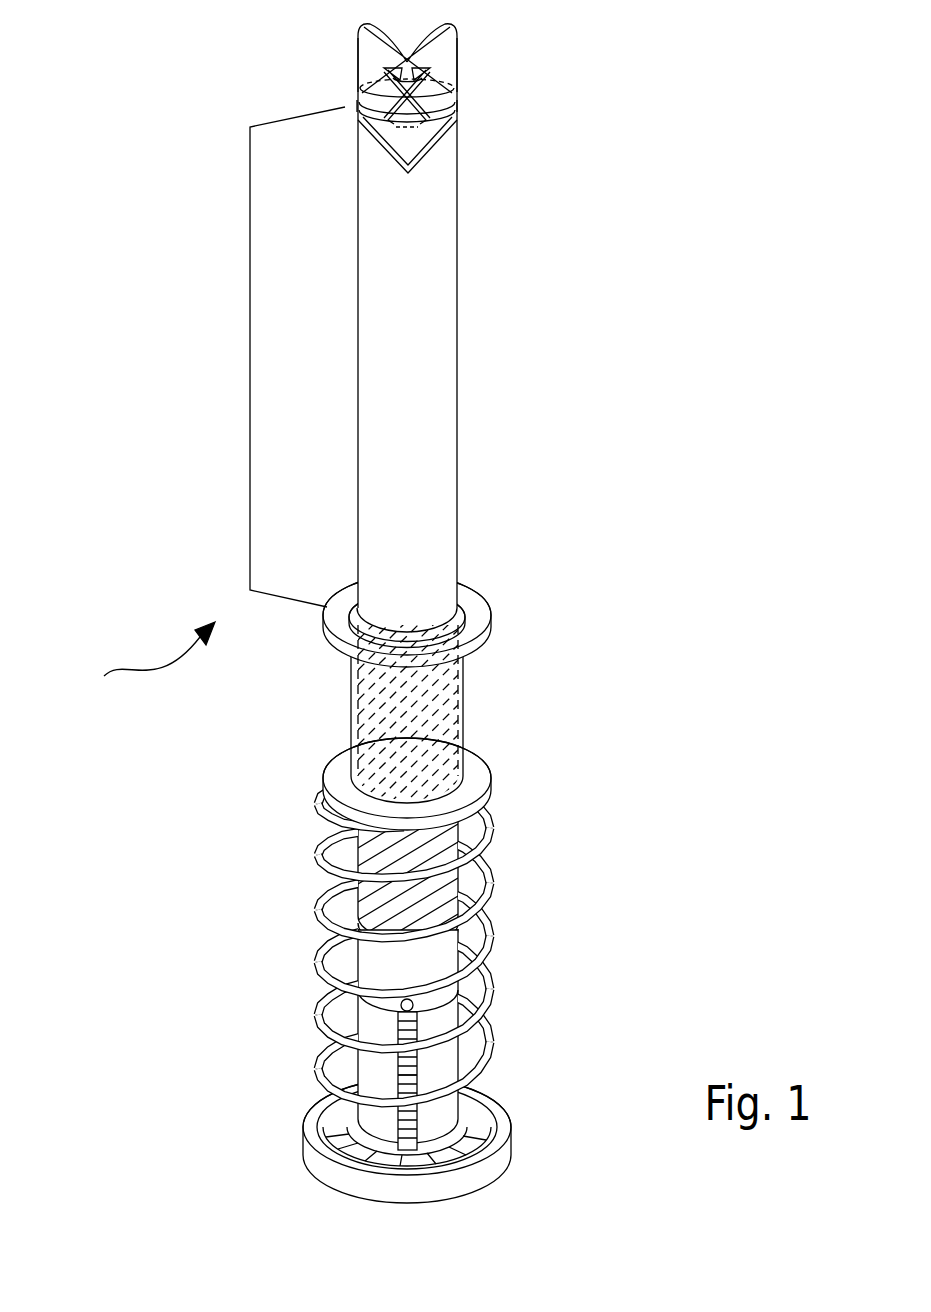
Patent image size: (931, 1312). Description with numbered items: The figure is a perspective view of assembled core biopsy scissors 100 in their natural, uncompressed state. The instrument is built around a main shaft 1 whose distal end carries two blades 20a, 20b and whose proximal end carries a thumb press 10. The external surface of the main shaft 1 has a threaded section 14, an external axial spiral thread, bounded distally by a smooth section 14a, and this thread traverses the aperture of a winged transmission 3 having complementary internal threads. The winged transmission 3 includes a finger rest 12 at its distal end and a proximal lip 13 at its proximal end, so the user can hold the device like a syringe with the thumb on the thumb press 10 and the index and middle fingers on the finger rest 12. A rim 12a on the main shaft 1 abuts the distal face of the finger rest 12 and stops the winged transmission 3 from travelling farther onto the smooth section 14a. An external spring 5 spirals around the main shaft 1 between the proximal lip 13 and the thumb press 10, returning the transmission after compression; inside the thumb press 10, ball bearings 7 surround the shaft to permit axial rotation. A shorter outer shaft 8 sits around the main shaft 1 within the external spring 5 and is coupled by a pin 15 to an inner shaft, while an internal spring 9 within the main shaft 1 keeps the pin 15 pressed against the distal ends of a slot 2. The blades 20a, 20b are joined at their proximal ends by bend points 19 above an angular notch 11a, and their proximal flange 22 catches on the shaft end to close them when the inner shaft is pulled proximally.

The main shaft 1 is at (457, 330).
The slot 2 is at (420, 1070).
The winged transmission 3 is at (467, 702).
The external spring 5 is at (490, 840).
The ball bearings 7 is at (460, 1138).
The outer shaft 8 is at (490, 962).
The internal spring 9 is at (404, 1080).
The thumb press 10 is at (478, 1185).
The angular notch 11a is at (430, 150).
The finger rest 12 is at (493, 617).
The rim 12a is at (467, 603).
The proximal lip 13 is at (491, 768).
The threaded section 14 is at (455, 900).
The distal smooth section 14a is at (250, 350).
The pin 15 is at (400, 1006).
The bend points 19 is at (430, 100).
The blade 20a is at (460, 38).
The blade 20b is at (358, 62).
The proximal flange 22 is at (380, 113).
The core biopsy scissors 100 is at (136, 669).